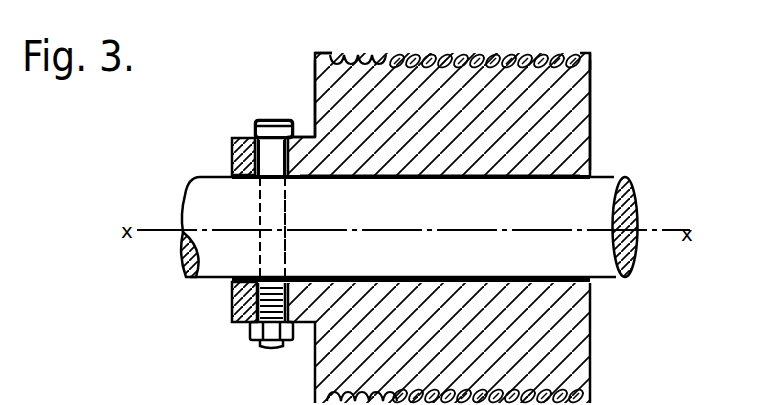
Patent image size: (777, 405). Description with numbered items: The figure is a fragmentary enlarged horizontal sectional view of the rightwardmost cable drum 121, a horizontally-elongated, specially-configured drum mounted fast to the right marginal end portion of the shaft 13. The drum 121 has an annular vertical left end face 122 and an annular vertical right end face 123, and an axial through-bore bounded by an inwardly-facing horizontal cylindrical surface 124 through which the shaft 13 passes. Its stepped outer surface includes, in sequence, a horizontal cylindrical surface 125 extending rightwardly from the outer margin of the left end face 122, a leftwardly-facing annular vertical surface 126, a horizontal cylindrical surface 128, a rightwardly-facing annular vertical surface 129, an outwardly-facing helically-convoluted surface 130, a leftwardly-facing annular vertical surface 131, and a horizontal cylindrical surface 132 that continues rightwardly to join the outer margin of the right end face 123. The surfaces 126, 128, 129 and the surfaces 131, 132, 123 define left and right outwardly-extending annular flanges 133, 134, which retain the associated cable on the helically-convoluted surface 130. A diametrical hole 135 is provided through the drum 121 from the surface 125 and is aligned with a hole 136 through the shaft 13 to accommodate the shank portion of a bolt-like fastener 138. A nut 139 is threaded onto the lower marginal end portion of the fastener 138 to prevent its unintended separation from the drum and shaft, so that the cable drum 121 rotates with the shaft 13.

The shaft 13 is at (648, 190).
The cable drum 121 is at (602, 92).
The left end face 122 is at (232, 152).
The right end face 123 is at (592, 128).
The inwardly-facing horizontal cylindrical surface 124 is at (390, 180).
The horizontal cylindrical surface 125 is at (250, 136).
The leftwardly-facing annular vertical surface 126 is at (315, 82).
The horizontal cylindrical surface 128 is at (330, 57).
The rightwardly-facing annular vertical surface 129 is at (338, 58).
The outwardly-facing helically-convoluted surface 130 is at (388, 60).
The leftwardly-facing annular vertical surface 131 is at (568, 56).
The horizontal cylindrical surface 132 is at (589, 53).
The left annular flange 133 is at (318, 400).
The right annular flange 134 is at (590, 397).
The diametrical hole 135 is at (262, 157).
The hole 136 is at (287, 243).
The bolt-like fastener 138 is at (268, 120).
The nut 139 is at (252, 330).